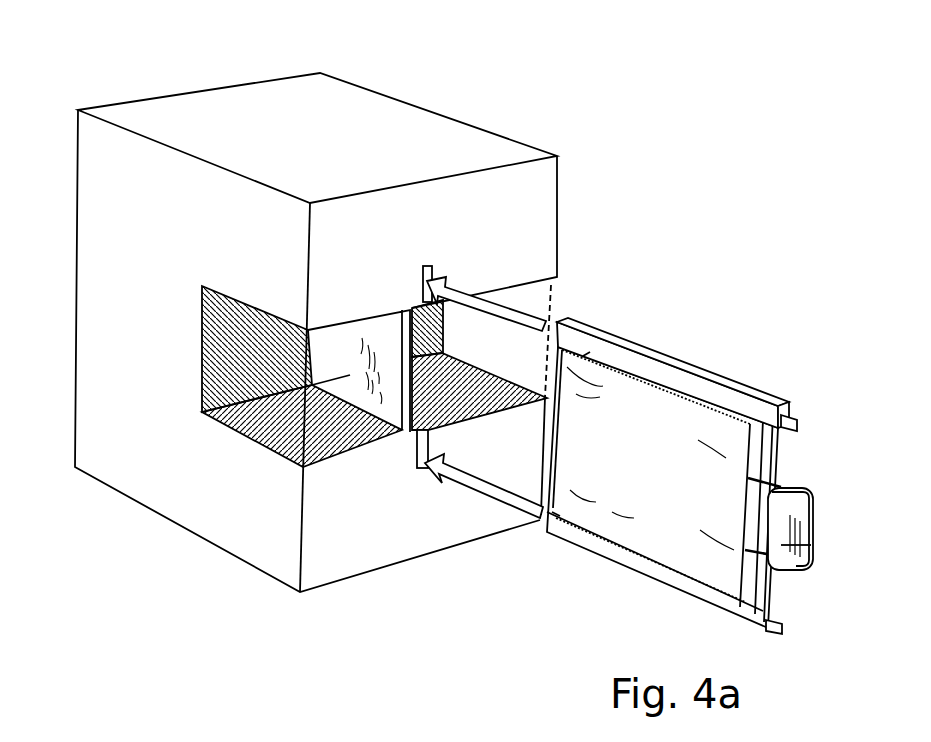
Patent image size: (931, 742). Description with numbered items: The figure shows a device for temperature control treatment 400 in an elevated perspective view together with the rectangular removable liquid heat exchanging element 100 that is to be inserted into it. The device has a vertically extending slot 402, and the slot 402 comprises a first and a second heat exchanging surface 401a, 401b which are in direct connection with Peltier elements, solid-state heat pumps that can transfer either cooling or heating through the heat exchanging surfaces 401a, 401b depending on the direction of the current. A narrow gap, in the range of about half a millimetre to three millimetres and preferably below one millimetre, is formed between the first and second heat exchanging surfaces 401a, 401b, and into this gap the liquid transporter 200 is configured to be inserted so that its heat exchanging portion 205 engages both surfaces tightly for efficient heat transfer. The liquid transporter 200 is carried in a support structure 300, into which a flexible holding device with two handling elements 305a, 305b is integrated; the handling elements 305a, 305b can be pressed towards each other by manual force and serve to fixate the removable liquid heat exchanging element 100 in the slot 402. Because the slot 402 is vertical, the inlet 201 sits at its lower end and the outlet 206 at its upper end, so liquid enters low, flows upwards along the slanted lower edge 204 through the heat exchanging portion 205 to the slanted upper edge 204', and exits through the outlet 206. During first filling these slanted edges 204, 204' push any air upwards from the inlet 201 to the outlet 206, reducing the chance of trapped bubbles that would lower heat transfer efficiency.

The device for temperature control treatment 400 is at (112, 59).
The slot 402 is at (443, 272).
The first heat exchanging surface 401a is at (317, 387).
The second heat exchanging surface 401b is at (458, 362).
The removable liquid heat exchanging element 100 is at (668, 482).
The liquid transporter 200 is at (660, 487).
The heat exchanging portion 205 is at (592, 593).
The slanted lower edge 204 is at (651, 318).
The slanted upper edge 204' is at (512, 558).
The support structure 300 is at (685, 383).
The outlet 206 is at (793, 420).
The inlet 201 is at (780, 634).
The handling element 305a is at (785, 508).
The handling element 305b is at (815, 537).